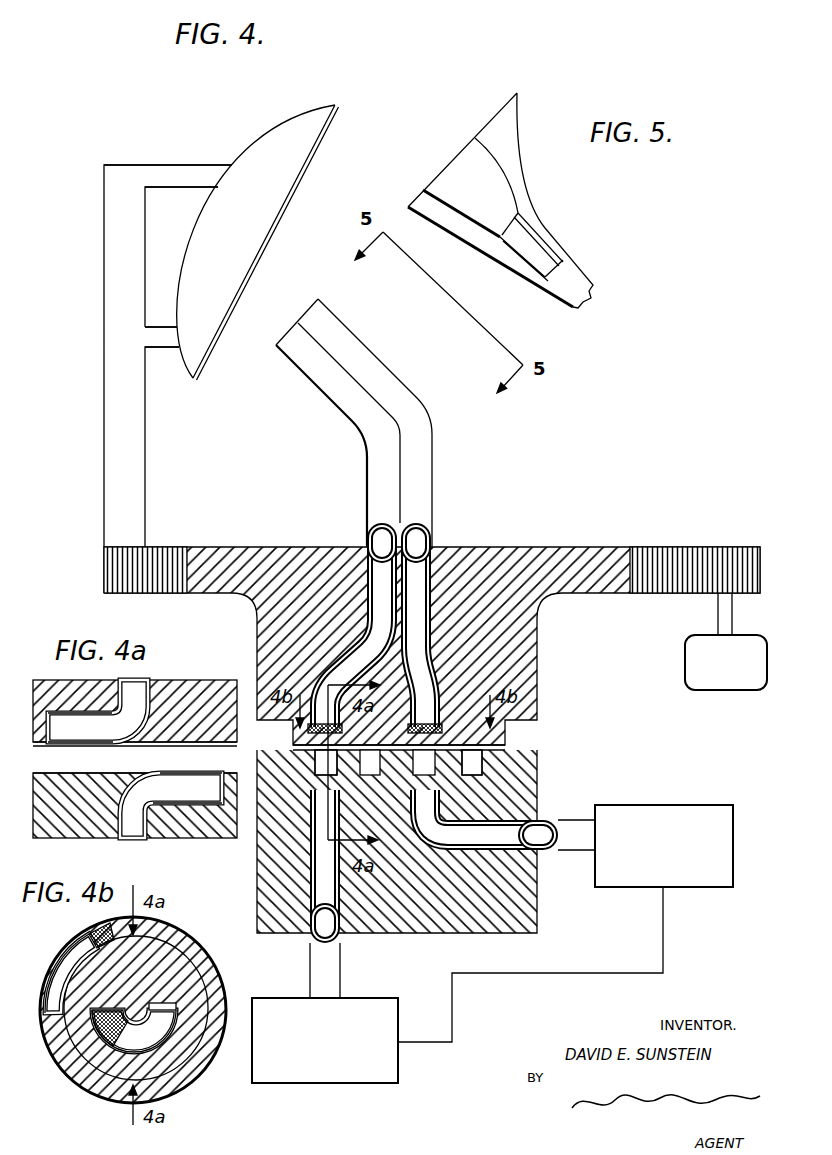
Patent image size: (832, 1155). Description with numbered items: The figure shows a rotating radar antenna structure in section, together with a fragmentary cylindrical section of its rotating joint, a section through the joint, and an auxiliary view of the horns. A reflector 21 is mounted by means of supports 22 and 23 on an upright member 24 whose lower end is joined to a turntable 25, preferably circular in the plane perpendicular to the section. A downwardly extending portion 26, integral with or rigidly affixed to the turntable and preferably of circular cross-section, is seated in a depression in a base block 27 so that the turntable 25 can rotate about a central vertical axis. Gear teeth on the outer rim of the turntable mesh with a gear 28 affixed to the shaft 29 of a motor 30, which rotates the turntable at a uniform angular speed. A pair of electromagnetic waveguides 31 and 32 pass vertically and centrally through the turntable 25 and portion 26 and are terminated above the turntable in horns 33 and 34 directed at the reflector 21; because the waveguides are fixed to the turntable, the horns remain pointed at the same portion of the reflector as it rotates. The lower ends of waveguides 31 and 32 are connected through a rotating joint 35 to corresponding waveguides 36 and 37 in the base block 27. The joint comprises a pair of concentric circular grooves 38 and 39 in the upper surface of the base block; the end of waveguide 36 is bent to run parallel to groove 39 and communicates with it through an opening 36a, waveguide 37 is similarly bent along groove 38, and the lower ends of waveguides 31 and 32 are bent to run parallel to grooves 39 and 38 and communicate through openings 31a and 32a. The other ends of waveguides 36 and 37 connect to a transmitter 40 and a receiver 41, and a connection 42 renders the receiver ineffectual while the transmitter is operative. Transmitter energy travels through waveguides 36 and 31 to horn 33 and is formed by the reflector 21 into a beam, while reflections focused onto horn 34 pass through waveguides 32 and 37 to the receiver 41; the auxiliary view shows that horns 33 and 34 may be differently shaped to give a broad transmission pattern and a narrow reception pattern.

In FIG. 4, the reflector 21 is at (287, 127).
In FIG. 4, the support 22 is at (208, 166).
In FIG. 4, the support 23 is at (172, 349).
In FIG. 4, the upright member 24 is at (103, 400).
In FIG. 4, the turntable 25 is at (262, 547).
In FIG. 4, the downwardly extending portion 26 is at (540, 682).
In FIG. 4, the base block 27 is at (540, 783).
In FIG. 4, the gear 28 is at (736, 548).
In FIG. 4, the shaft 29 is at (733, 606).
In FIG. 4, the motor 30 is at (686, 676).
In FIG. 4, the waveguide 31 is at (372, 482).
In FIG. 4A, the waveguide 31 is at (122, 700).
In FIG. 4B, the waveguide 31 is at (50, 990).
In FIG. 4A, the opening 31a is at (78, 738).
In FIG. 4B, the opening 31a is at (57, 978).
In FIG. 4, the waveguide 32 is at (434, 462).
In FIG. 4B, the waveguide 32 is at (168, 1047).
In FIG. 4B, the opening 32a is at (92, 1058).
In FIG. 4, the horn 33 is at (327, 388).
In FIG. 5, the horn 33 is at (505, 140).
In FIG. 4, the horn 34 is at (372, 346).
In FIG. 5, the horn 34 is at (483, 208).
In FIG. 4, the rotating joint 35 is at (395, 731).
In FIG. 4, the waveguide 36 is at (341, 962).
In FIG. 4A, the waveguide 36 is at (166, 838).
In FIG. 4A, the opening 36a is at (190, 782).
In FIG. 4, the waveguide 37 is at (582, 852).
In FIG. 4, the circular groove 38 is at (415, 762).
In FIG. 4, the circular groove 39 is at (322, 762).
In FIG. 4A, the circular groove 39 is at (58, 762).
In FIG. 4, the transmitter 40 is at (330, 1085).
In FIG. 4, the receiver 41 is at (682, 806).
In FIG. 4, the connection 42 is at (556, 974).